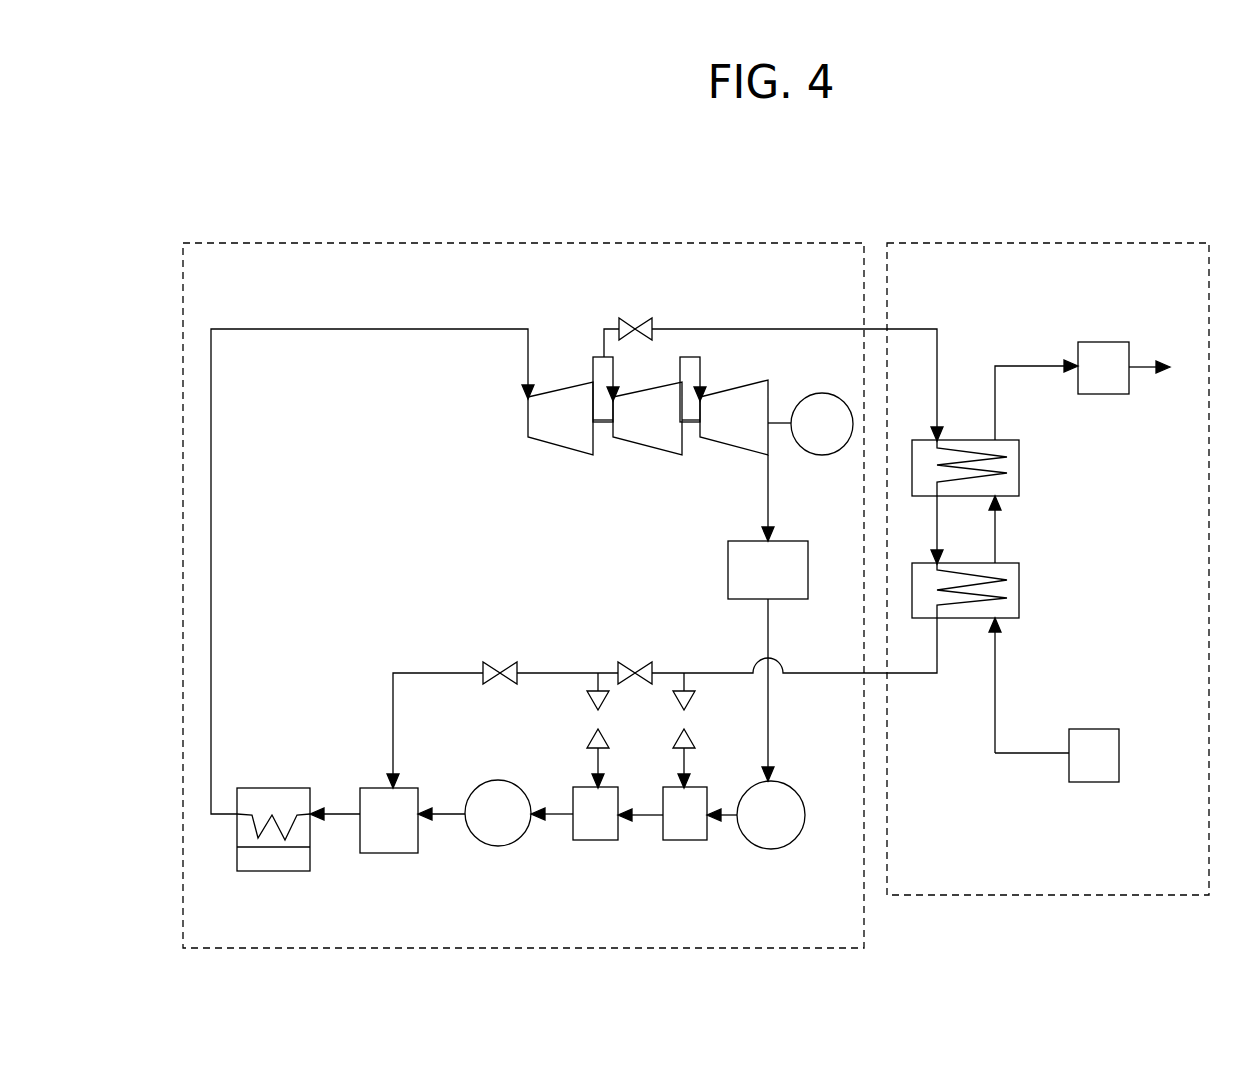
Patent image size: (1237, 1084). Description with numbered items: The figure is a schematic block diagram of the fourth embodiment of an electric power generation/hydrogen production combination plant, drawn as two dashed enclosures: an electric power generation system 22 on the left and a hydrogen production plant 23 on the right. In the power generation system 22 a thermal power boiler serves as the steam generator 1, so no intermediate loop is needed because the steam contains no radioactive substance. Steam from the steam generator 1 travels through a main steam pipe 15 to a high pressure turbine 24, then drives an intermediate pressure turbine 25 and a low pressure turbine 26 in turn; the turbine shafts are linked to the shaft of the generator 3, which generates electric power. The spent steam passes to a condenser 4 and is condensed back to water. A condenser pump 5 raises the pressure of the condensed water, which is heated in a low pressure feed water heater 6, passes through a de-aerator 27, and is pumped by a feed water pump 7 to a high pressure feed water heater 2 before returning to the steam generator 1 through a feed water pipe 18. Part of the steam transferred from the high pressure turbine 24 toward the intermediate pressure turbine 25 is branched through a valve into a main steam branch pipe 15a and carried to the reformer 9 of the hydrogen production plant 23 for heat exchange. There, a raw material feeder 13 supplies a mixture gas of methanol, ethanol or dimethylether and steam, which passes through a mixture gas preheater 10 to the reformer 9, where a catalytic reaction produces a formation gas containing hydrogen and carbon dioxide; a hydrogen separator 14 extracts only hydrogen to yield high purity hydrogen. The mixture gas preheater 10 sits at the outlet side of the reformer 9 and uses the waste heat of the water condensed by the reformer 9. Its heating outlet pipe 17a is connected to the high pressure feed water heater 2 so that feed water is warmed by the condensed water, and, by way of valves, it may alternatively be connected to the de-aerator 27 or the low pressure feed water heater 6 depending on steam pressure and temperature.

The steam generator 1 is at (271, 874).
The high pressure feed water heater 2 is at (393, 856).
The generator 3 is at (829, 457).
The condenser 4 is at (728, 574).
The condenser pump 5 is at (770, 850).
The low pressure feed water heater 6 is at (683, 843).
The feed water pump 7 is at (497, 848).
The reformer 9 is at (1020, 459).
The mixture gas preheater 10 is at (1020, 585).
The raw material feeder 13 is at (1087, 786).
The hydrogen separator 14 is at (1093, 342).
The main steam pipe 15 is at (408, 329).
The main steam branch pipe 15a is at (718, 329).
The heating outlet pipe 17a is at (920, 682).
The feed water pipe 18 is at (338, 820).
The electric power generation system 22 is at (575, 241).
The hydrogen production plant 23 is at (1130, 241).
The high pressure turbine 24 is at (538, 458).
The intermediate pressure turbine 25 is at (622, 458).
The low pressure turbine 26 is at (720, 458).
The de-aerator 27 is at (585, 843).